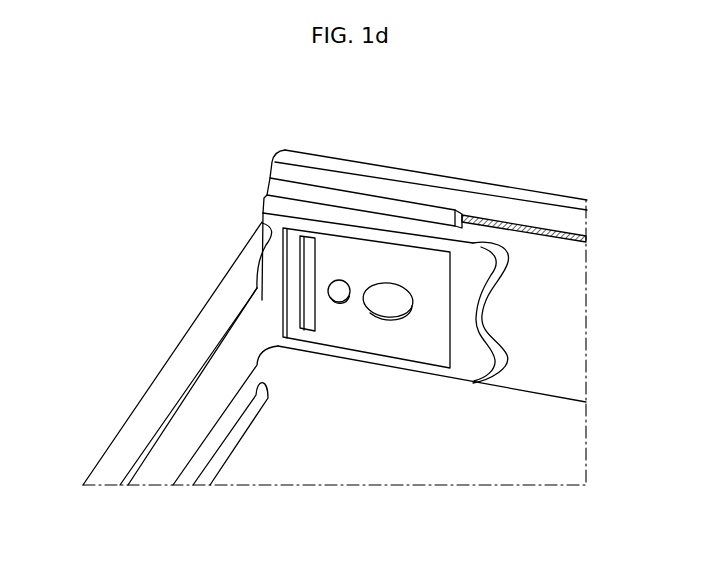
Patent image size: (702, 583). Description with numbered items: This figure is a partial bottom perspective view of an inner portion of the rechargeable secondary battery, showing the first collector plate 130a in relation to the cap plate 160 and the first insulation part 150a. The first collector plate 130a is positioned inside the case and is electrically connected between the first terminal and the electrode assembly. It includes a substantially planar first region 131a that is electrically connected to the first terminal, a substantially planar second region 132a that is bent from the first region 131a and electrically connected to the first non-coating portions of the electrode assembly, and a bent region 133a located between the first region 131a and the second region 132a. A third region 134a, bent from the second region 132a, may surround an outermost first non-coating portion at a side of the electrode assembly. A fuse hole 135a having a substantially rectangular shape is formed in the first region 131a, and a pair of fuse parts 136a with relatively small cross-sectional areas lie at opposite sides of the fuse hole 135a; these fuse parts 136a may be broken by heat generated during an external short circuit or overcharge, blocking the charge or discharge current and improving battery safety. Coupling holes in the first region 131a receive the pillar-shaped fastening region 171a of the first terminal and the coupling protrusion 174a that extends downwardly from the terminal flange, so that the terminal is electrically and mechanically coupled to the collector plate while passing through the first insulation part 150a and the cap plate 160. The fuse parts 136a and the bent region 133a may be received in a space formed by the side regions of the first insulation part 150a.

The first collector plate 130a is at (159, 353).
The first region 131a is at (435, 347).
The second region 132a is at (163, 460).
The bent region 133a is at (270, 217).
The third region 134a is at (187, 360).
The fuse hole 135a is at (320, 260).
The fuse parts 136a is at (306, 248).
The first insulation part 150a is at (512, 227).
The cap plate 160 is at (568, 289).
The fastening region 171a is at (387, 307).
The coupling protrusion 174a is at (338, 297).